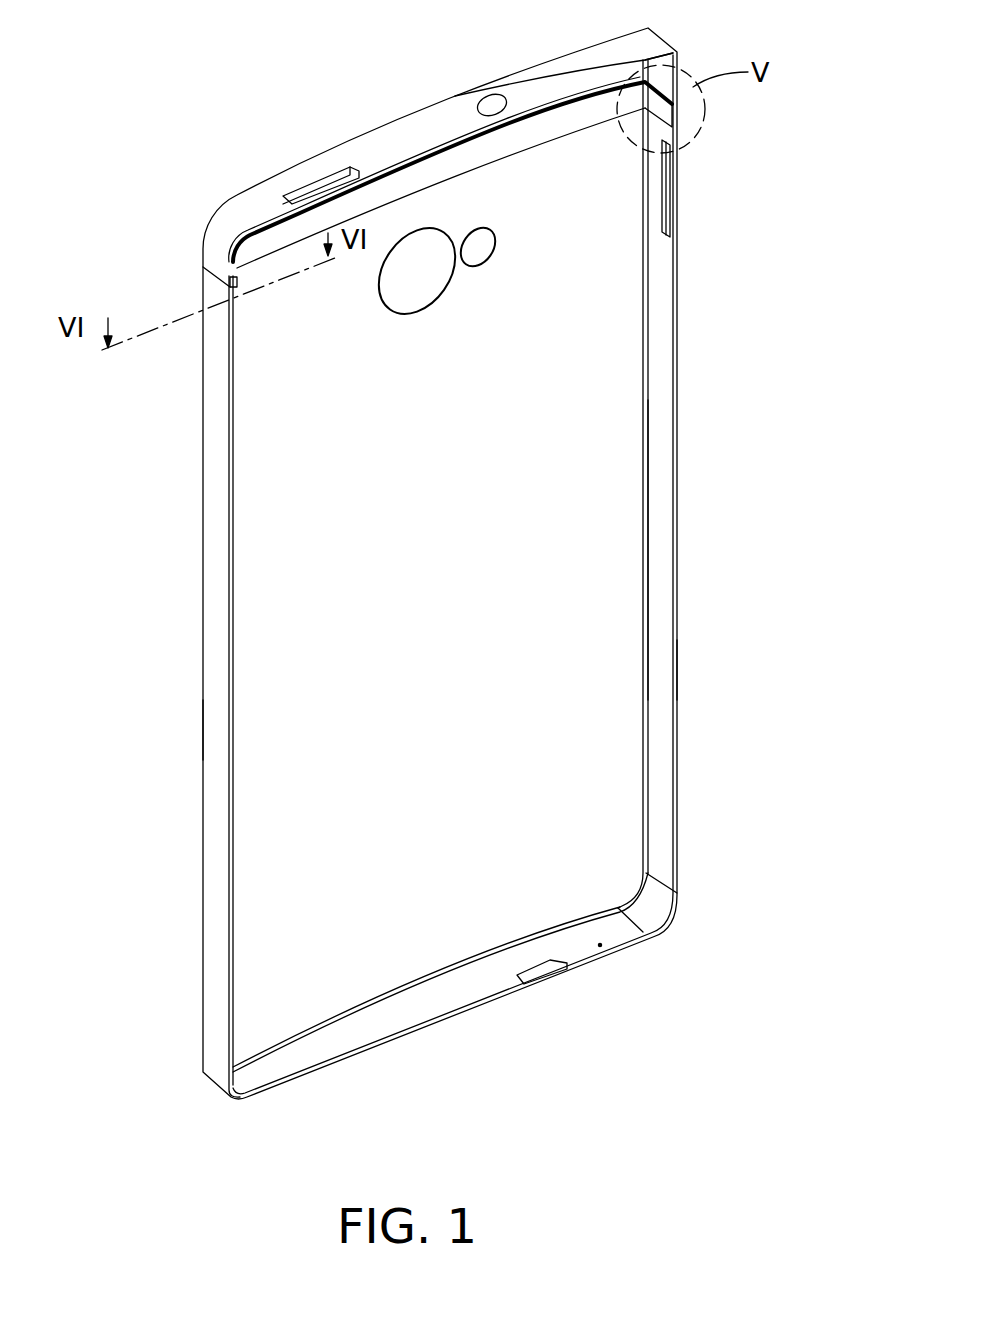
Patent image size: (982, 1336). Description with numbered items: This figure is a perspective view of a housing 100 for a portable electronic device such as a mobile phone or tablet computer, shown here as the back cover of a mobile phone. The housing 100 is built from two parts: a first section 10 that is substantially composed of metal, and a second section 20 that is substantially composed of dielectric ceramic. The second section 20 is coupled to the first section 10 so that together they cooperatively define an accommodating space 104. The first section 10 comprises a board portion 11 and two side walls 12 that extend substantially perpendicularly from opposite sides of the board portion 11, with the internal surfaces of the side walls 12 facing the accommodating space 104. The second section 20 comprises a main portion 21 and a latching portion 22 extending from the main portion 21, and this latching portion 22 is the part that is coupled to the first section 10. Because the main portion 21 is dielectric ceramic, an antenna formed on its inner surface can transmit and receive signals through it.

The housing 100 is at (122, 170).
The first section 10 is at (213, 297).
The board portion 11 is at (607, 615).
The side walls 12 is at (217, 745).
The accommodating space 104 is at (600, 450).
The second section 20 is at (228, 222).
The main portion 21 is at (665, 63).
The latching portion 22 is at (660, 115).